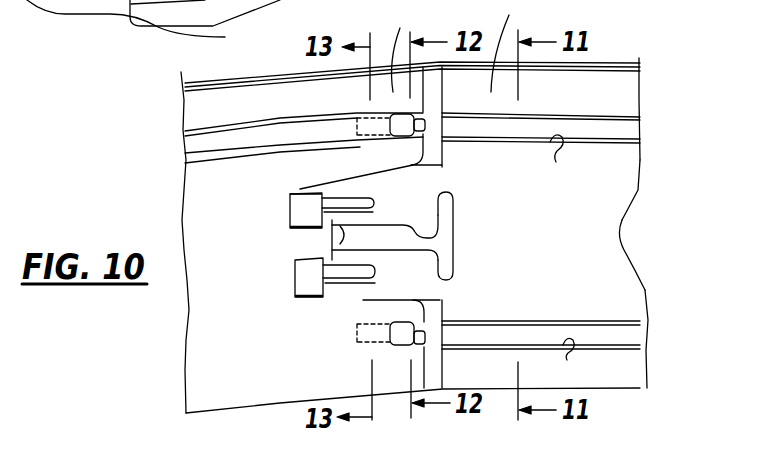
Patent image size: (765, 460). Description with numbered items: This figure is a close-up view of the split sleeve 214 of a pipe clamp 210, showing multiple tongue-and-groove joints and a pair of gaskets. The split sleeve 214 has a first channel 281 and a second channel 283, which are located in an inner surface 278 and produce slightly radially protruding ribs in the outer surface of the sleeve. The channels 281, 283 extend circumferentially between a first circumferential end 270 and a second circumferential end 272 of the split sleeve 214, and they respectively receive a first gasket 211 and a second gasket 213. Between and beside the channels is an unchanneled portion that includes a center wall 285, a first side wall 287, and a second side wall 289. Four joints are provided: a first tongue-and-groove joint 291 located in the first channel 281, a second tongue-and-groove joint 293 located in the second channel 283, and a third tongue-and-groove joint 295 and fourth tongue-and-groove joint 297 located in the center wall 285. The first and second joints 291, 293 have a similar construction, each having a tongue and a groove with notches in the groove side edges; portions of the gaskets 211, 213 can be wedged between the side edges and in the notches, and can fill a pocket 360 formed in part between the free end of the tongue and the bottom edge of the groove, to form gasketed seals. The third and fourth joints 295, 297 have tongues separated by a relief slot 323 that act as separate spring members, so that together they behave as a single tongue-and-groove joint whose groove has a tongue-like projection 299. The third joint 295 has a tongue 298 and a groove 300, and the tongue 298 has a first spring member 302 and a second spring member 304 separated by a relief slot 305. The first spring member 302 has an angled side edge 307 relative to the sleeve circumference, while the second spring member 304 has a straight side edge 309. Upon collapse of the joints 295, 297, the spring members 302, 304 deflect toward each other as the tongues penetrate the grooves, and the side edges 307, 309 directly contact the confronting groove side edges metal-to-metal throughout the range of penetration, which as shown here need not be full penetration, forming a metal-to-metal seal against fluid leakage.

The pipe clamp 210 is at (228, 57).
The first gasket 211 is at (534, 126).
The second gasket 213 is at (550, 333).
The split sleeve 214 is at (210, 420).
The first circumferential end 270 is at (404, 47).
The second circumferential end 272 is at (510, 46).
The inner surface 278 is at (592, 208).
The first channel 281 is at (574, 157).
The second channel 283 is at (579, 361).
The center wall 285 is at (590, 231).
The first side wall 287 is at (620, 92).
The second side wall 289 is at (620, 377).
The first tongue-and-groove joint 291 is at (432, 104).
The second tongue-and-groove joint 293 is at (433, 360).
The third tongue-and-groove joint 295 is at (357, 170).
The fourth tongue-and-groove joint 297 is at (360, 305).
The tongue 298 is at (420, 200).
The tongue-like projection 299 is at (355, 248).
The groove 300 is at (297, 215).
The first spring member 302 is at (333, 189).
The second spring member 304 is at (333, 221).
The relief slot 305 is at (358, 203).
The angled side edge 307 is at (390, 172).
The straight side edge 309 is at (440, 221).
The relief slot 323 is at (446, 232).
The pocket 360 is at (357, 114).